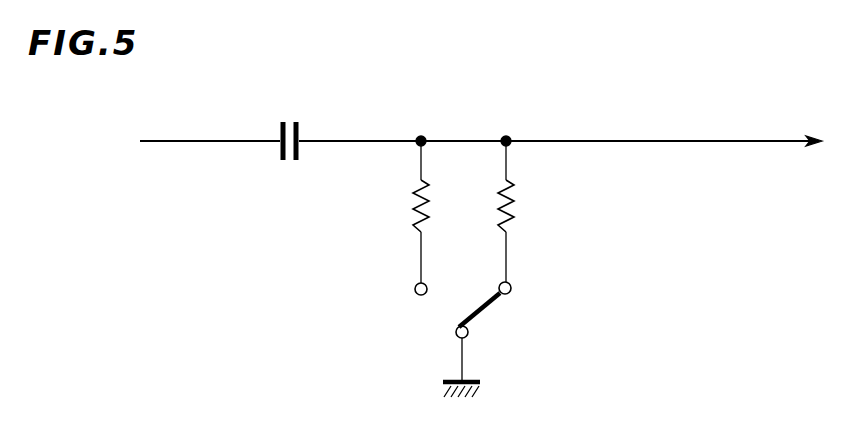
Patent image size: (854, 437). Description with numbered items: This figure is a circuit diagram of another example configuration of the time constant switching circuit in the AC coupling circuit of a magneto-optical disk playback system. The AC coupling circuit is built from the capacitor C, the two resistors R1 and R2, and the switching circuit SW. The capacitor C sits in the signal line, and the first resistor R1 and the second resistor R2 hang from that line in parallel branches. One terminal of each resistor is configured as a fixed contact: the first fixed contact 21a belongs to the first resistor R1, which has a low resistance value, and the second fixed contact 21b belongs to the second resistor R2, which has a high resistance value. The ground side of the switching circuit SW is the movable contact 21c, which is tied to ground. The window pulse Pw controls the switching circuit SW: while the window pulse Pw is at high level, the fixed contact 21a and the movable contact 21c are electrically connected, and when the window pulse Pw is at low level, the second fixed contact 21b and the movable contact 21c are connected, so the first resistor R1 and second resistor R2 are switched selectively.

The first fixed contact 21a is at (355, 297).
The second fixed contact 21b is at (558, 276).
The movable contact 21c is at (408, 361).
The capacitor C is at (289, 127).
The first resistor R1 is at (395, 214).
The second resistor R2 is at (531, 214).
The switching circuit SW is at (500, 332).
The window pulse Pw is at (505, 312).